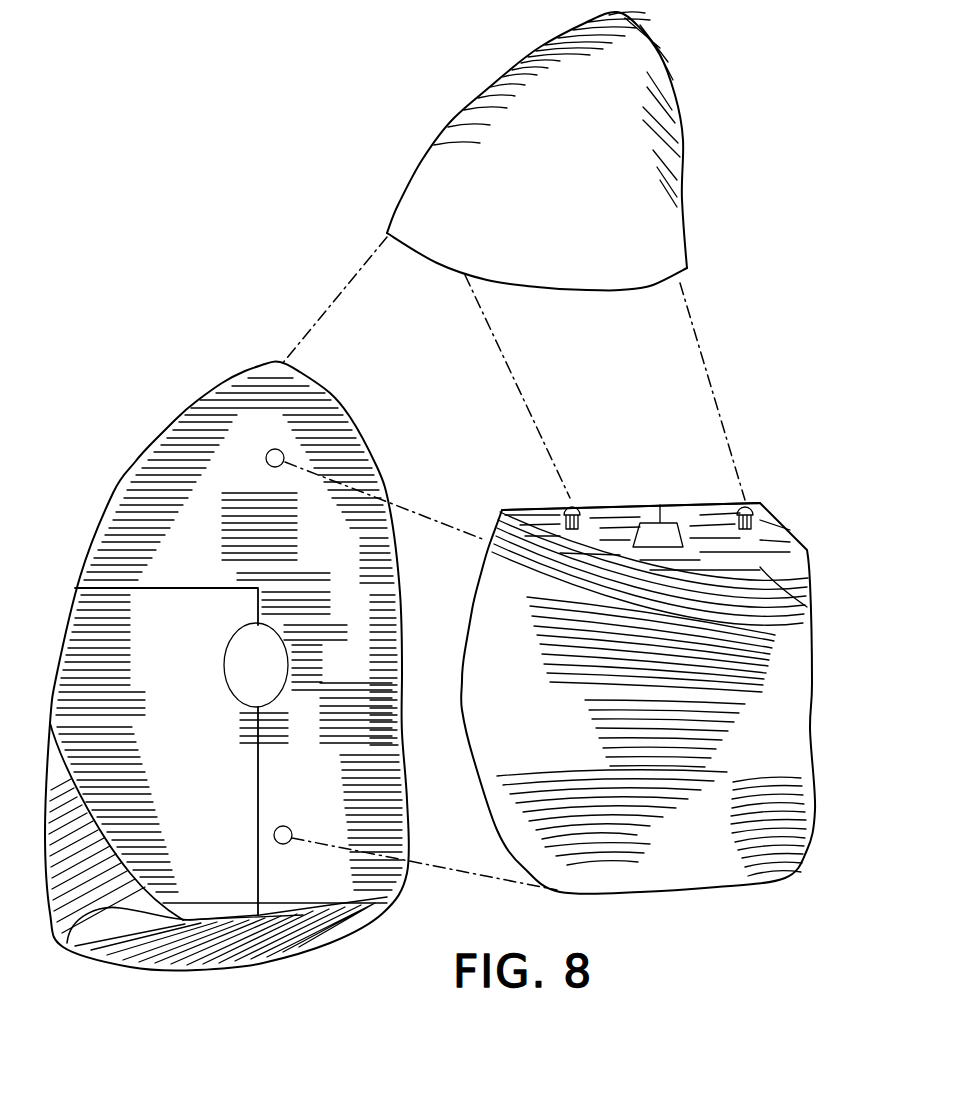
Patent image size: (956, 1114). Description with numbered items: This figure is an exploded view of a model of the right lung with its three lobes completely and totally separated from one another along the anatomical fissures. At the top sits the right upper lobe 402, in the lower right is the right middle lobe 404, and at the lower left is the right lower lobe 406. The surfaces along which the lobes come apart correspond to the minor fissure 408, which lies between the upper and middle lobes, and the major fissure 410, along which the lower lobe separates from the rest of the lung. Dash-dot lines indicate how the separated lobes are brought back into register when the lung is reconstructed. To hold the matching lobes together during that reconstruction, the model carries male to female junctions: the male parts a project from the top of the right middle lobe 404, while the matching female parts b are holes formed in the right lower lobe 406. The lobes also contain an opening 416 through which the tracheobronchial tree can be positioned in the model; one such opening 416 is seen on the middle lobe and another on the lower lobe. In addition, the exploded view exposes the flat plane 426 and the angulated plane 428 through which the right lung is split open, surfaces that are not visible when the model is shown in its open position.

The right upper lobe 402 is at (653, 224).
The right middle lobe 404 is at (783, 732).
The right lower lobe 406 is at (57, 606).
The minor fissure 408 is at (643, 287).
The major fissure 410 is at (113, 848).
The opening 416 is at (673, 537).
The flat plane 426 is at (145, 588).
The angulated plane 428 is at (784, 527).
The male to female junction a is at (577, 500).
The male to female junction b is at (264, 458).